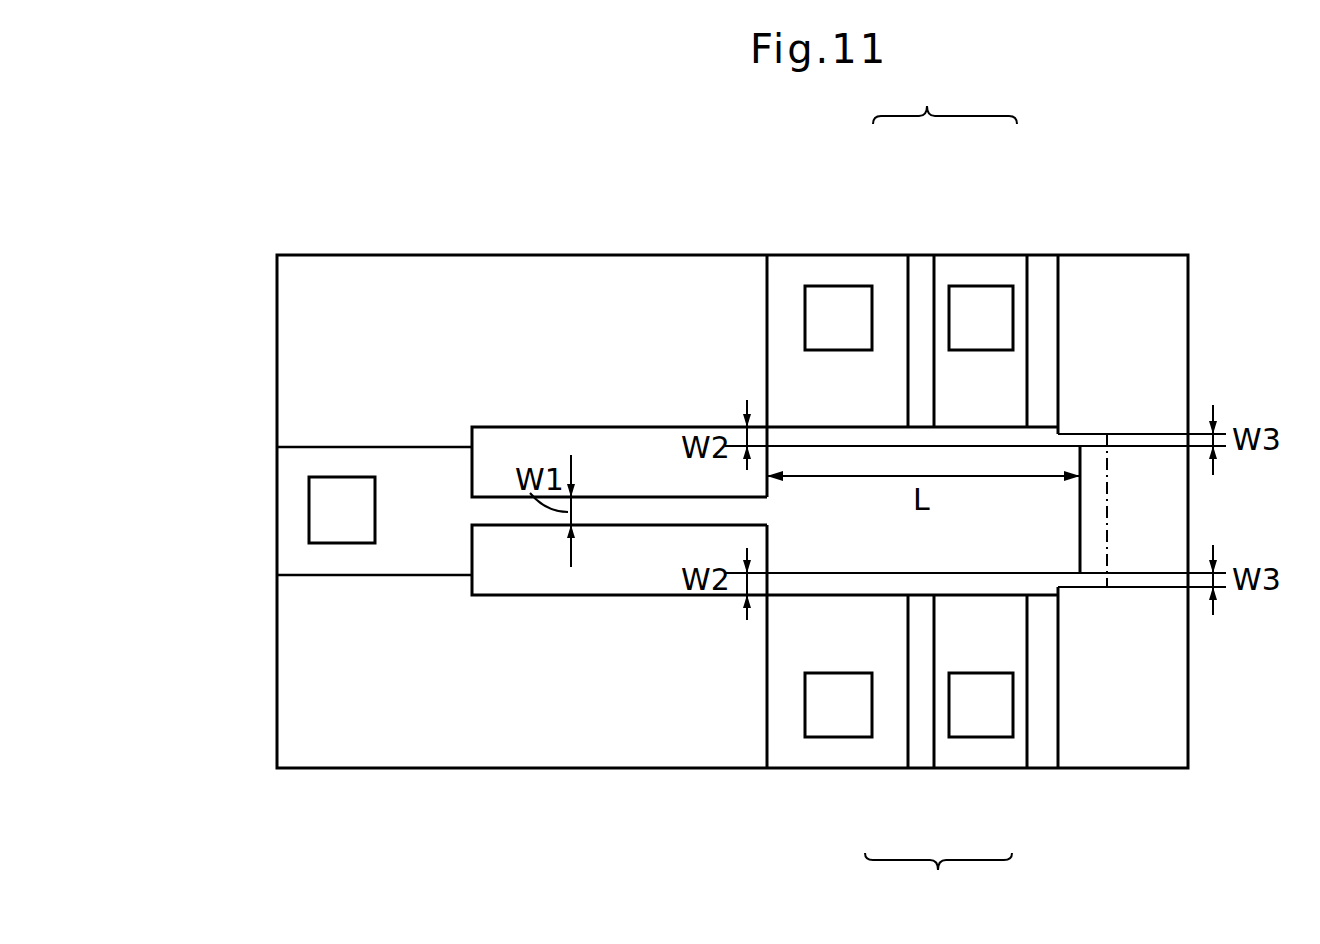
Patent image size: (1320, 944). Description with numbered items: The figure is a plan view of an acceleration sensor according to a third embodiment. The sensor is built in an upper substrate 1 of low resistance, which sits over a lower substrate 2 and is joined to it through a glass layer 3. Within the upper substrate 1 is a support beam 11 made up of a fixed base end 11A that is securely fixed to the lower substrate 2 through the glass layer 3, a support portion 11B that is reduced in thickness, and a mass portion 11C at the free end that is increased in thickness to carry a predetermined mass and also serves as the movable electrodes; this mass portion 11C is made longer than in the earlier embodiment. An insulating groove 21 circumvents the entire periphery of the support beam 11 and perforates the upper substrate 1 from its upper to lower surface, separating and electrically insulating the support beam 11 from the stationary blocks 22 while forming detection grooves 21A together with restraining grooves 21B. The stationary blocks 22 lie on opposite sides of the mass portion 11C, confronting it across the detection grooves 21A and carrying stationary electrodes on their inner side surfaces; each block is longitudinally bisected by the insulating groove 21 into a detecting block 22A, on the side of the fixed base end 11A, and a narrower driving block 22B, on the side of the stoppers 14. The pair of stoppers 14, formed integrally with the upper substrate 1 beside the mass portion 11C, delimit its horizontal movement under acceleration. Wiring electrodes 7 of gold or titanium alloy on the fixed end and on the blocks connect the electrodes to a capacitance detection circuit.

The upper substrate 1 is at (1147, 252).
The lower substrate 2 is at (518, 568).
The glass layer 3 is at (355, 715).
The wiring electrodes 7 is at (325, 523).
The support beam 11 is at (602, 497).
The fixed base end 11A is at (300, 465).
The support portion 11B is at (637, 507).
The mass portion 11C is at (1052, 541).
The stoppers 14 is at (1155, 302).
The insulating groove 21 is at (1043, 257).
The detection grooves 21A is at (812, 420).
The restraining grooves 21B is at (1152, 440).
The stationary blocks 22 is at (941, 488).
The detecting block 22A is at (881, 255).
The driving block 22B is at (951, 255).